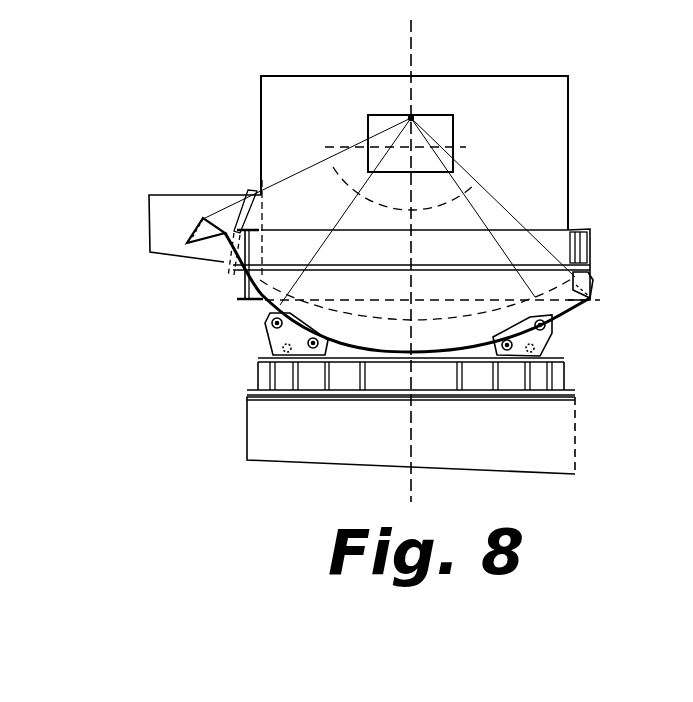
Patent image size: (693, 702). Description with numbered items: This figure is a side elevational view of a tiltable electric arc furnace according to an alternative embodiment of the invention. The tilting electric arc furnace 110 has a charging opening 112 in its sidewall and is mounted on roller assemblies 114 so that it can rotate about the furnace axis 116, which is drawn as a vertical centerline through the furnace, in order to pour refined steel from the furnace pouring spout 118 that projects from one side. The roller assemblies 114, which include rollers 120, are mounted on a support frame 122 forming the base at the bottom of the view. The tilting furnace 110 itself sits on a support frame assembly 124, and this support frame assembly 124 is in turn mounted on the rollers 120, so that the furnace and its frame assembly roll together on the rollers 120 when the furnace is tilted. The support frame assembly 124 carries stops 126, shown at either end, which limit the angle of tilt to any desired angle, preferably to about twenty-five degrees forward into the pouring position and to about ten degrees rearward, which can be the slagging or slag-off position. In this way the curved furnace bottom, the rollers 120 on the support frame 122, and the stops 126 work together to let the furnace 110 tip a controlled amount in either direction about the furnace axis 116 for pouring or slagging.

The tilting electric arc furnace 110 is at (256, 123).
The charging opening 112 is at (455, 130).
The roller assemblies 114 is at (270, 335).
The furnace axis 116 is at (413, 117).
The furnace pouring spout 118 is at (157, 255).
The rollers 120 is at (555, 323).
The support frame 122 is at (568, 387).
The support frame assembly 124 is at (242, 272).
The stops 126 is at (203, 245).